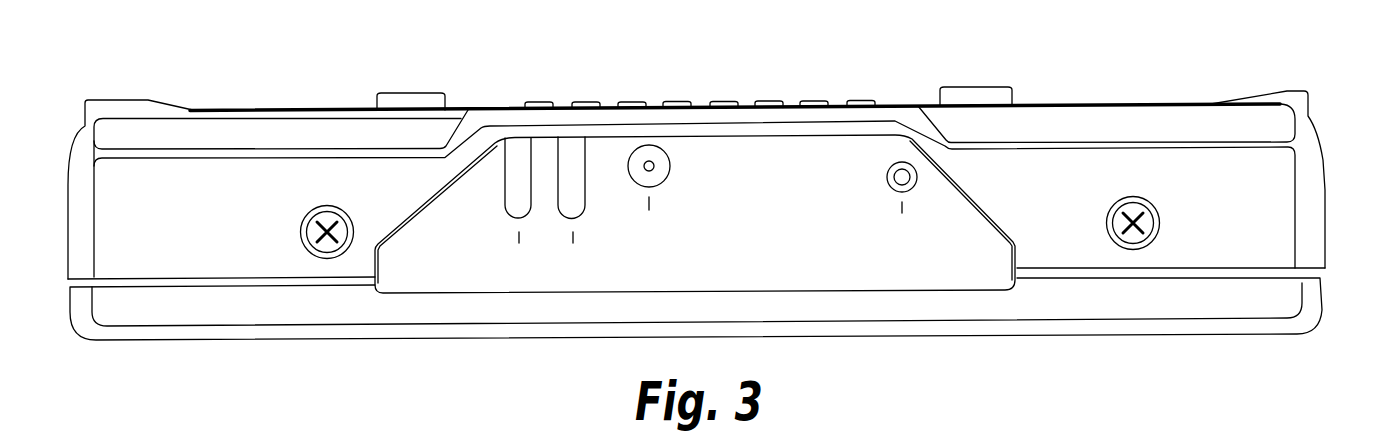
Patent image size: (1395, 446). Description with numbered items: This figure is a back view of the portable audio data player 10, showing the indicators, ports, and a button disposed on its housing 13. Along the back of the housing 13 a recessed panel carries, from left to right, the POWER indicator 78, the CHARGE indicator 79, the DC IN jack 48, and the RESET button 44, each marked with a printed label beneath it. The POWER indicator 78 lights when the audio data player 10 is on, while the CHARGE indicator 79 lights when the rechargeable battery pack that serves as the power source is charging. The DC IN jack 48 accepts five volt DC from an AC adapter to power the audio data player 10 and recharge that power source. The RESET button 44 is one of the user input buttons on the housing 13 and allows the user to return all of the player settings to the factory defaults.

The audio data player 10 is at (1323, 157).
The housing 13 is at (1104, 102).
The POWER indicator 78 is at (539, 140).
The CHARGE indicator 79 is at (593, 140).
The DC IN jack 48 is at (670, 147).
The RESET button 44 is at (888, 171).